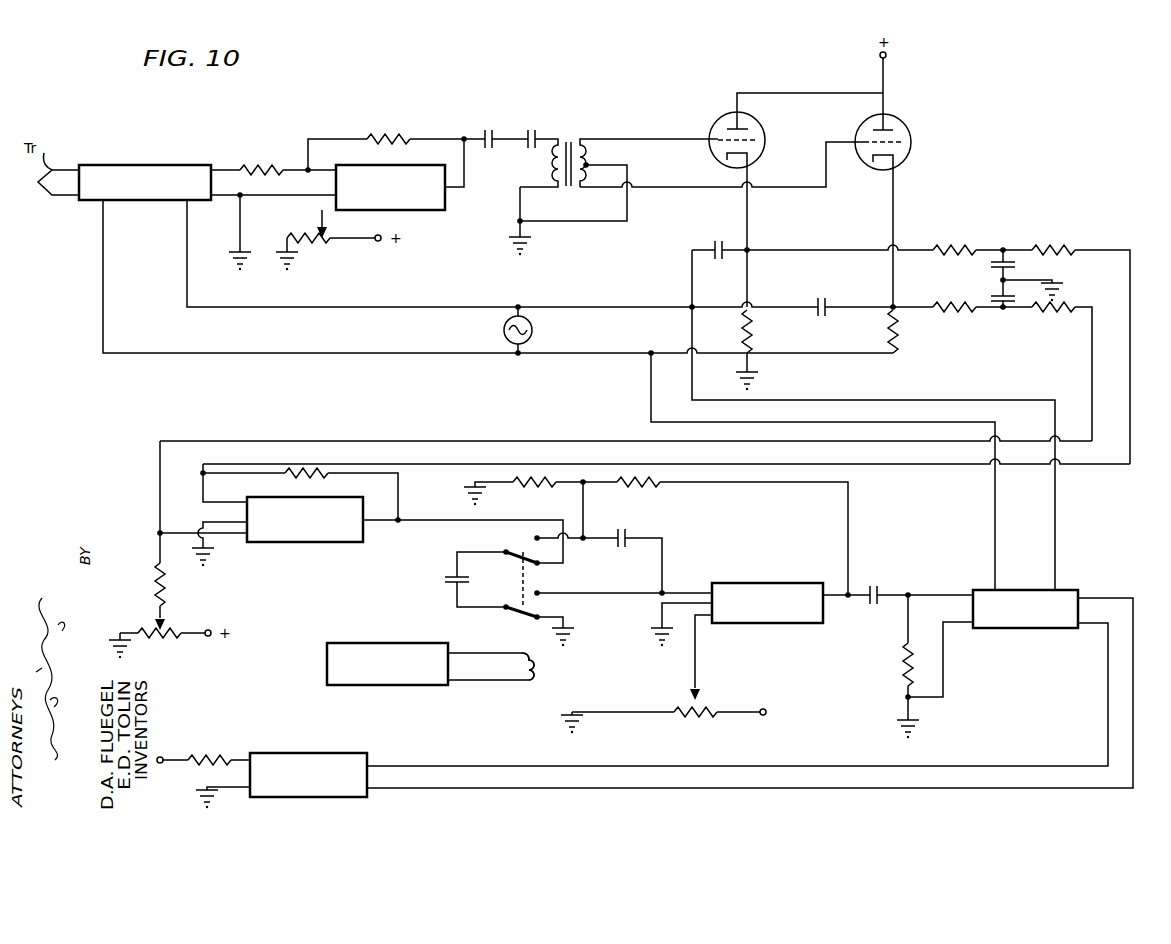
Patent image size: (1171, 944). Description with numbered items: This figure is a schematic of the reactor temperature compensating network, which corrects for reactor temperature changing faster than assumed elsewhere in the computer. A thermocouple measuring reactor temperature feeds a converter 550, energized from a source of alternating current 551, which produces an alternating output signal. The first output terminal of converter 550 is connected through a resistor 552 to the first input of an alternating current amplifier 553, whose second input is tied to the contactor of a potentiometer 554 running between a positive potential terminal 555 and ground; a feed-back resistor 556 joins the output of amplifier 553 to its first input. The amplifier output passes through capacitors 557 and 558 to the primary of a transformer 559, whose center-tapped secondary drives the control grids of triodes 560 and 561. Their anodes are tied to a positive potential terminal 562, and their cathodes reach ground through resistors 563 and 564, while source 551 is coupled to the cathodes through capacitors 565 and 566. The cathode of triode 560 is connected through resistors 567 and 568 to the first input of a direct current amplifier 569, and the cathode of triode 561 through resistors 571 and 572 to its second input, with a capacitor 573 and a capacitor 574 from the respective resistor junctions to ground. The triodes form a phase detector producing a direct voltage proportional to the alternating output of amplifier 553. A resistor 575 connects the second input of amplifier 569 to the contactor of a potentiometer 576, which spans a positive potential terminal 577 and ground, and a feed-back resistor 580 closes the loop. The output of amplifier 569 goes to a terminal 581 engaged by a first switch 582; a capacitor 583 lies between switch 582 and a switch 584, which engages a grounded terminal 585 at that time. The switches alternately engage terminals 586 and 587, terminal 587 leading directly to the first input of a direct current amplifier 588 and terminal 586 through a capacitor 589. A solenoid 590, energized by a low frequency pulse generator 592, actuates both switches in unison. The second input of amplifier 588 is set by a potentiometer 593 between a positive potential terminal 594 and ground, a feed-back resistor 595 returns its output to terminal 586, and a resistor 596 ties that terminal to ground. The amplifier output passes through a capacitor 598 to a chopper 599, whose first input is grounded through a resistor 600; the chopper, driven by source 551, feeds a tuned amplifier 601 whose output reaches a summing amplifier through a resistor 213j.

The converter 550 is at (196, 165).
The source of alternating current 551 is at (533, 336).
The resistor 552 is at (262, 166).
The alternating current amplifier 553 is at (435, 211).
The potentiometer 554 is at (340, 236).
The positive potential terminal 555 is at (376, 243).
The feed-back resistor 556 is at (390, 135).
The capacitor 557 is at (484, 134).
The capacitor 558 is at (528, 130).
The transformer 559 is at (572, 128).
The triode 560 is at (722, 116).
The triode 561 is at (900, 116).
The positive potential terminal 562 is at (886, 58).
The resistor 563 is at (753, 328).
The resistor 564 is at (896, 328).
The capacitor 565 is at (728, 252).
The capacitor 566 is at (824, 300).
The resistor 567 is at (958, 250).
The resistor 568 is at (1072, 250).
The direct current amplifier 569 is at (356, 544).
The resistor 571 is at (958, 311).
The resistor 572 is at (1064, 308).
The capacitor 573 is at (1014, 266).
The capacitor 574 is at (992, 297).
The resistor 575 is at (176, 574).
The potentiometer 576 is at (180, 640).
The positive potential terminal 577 is at (211, 629).
The feed-back resistor 580 is at (282, 475).
The terminal 581 is at (540, 565).
The first switch 582 is at (504, 552).
The capacitor 583 is at (447, 578).
The switch 584 is at (527, 613).
The grounded terminal 585 is at (533, 620).
The terminal 586 is at (534, 538).
The terminal 587 is at (541, 594).
The direct current amplifier 588 is at (825, 621).
The capacitor 589 is at (627, 538).
The solenoid 590 is at (530, 672).
The low frequency pulse generator 592 is at (326, 668).
The potentiometer 593 is at (705, 712).
The positive potential terminal 594 is at (770, 712).
The feed-back resistor 595 is at (648, 485).
The resistor 596 is at (518, 485).
The capacitor 598 is at (880, 597).
The chopper 599 is at (1070, 597).
The resistor 600 is at (906, 666).
The amplifier 601 is at (365, 757).
The resistor 213j is at (212, 754).